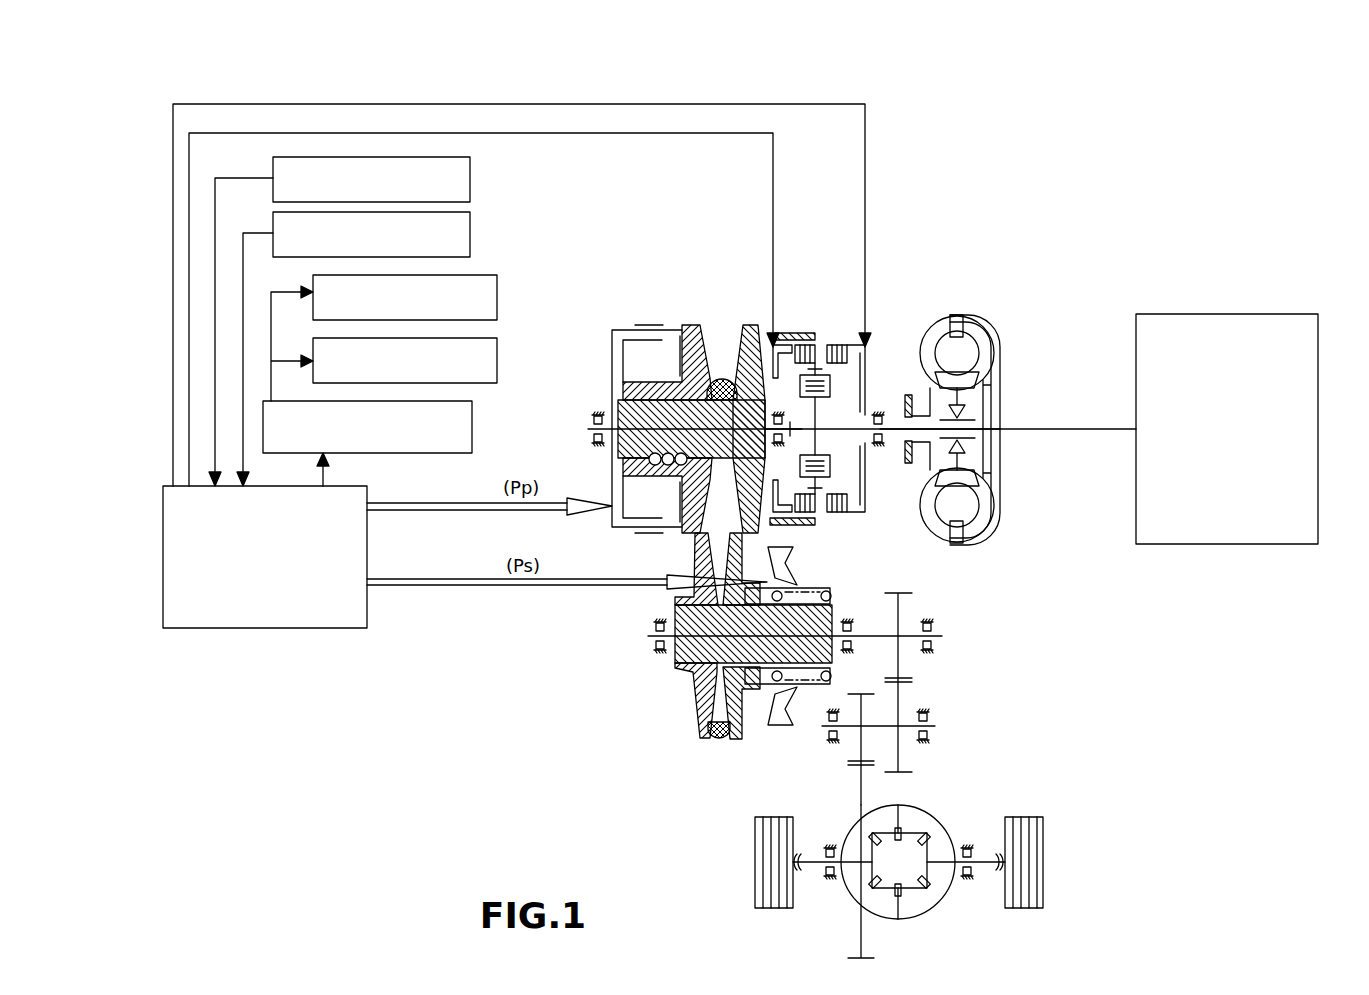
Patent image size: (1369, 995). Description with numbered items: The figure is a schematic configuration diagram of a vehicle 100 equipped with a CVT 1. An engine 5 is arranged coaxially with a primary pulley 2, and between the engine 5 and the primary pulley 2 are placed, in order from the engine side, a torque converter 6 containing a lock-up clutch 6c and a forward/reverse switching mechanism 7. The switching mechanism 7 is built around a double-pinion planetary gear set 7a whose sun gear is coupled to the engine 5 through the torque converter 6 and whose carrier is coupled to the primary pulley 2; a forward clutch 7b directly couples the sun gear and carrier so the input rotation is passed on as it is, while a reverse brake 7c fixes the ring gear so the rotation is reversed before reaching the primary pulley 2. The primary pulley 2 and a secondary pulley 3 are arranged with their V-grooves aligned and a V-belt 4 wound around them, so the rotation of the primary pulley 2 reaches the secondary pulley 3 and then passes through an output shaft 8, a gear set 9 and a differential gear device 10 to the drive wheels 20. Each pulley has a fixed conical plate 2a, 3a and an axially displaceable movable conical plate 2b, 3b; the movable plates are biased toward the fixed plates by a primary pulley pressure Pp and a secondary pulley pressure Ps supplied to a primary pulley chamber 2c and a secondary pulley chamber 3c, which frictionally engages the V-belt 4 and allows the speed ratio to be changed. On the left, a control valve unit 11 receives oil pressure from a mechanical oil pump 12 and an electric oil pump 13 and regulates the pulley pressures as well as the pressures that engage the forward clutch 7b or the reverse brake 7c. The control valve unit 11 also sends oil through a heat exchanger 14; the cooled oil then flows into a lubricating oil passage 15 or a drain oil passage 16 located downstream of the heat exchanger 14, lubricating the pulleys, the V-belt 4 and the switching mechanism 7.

The CVT 1 is at (896, 96).
The vehicle 100 is at (1178, 158).
The primary pulley 2 is at (668, 492).
The fixed conical plate 2a is at (745, 325).
The movable conical plate 2b is at (688, 323).
The primary pulley chamber 2c is at (636, 352).
The secondary pulley 3 is at (795, 677).
The fixed conical plate 3a is at (694, 684).
The movable conical plate 3b is at (728, 744).
The secondary pulley chamber 3c is at (760, 730).
The V-belt 4 is at (724, 380).
The engine 5 is at (1231, 314).
The torque converter 6 is at (970, 396).
The lock-up clutch 6c is at (996, 400).
The forward/reverse switching mechanism 7 is at (824, 376).
The double-pinion planetary gear set 7a is at (822, 352).
The forward clutch 7b is at (839, 345).
The reverse brake 7c is at (798, 344).
The output shaft 8 is at (882, 636).
The gear set 9 is at (924, 689).
The differential gear device 10 is at (950, 808).
The control valve unit 11 is at (192, 628).
The mechanical oil pump 12 is at (470, 182).
The electric oil pump 13 is at (470, 237).
The heat exchanger 14 is at (472, 432).
The lubricating oil passage 15 is at (497, 380).
The drain oil passage 16 is at (497, 290).
The drive wheels 20 is at (755, 854).